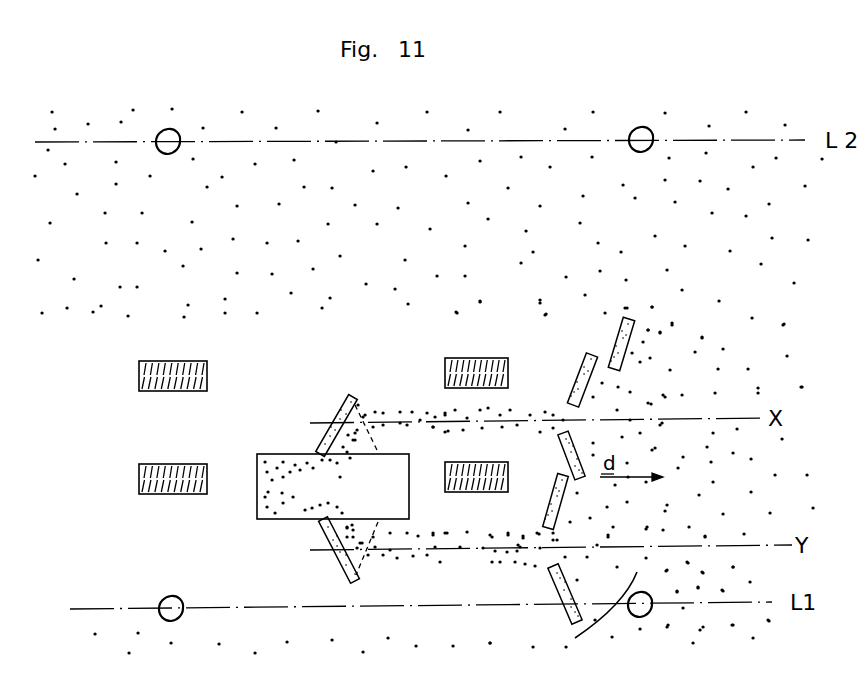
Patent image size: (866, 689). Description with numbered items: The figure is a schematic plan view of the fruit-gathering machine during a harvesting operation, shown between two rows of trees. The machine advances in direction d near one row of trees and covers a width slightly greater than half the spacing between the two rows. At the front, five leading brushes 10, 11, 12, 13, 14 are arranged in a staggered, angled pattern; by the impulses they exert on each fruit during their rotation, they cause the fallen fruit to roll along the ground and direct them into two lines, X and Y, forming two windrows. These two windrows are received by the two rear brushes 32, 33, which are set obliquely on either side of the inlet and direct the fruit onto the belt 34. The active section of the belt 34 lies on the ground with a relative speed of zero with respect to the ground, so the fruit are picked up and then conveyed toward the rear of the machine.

The leading brush 10 is at (618, 333).
The leading brush 11 is at (577, 373).
The leading brush 12 is at (560, 453).
The leading brush 13 is at (547, 502).
The leading brush 14 is at (563, 613).
The rear brush 32 is at (337, 550).
The rear brush 33 is at (337, 423).
The belt 34 is at (403, 490).